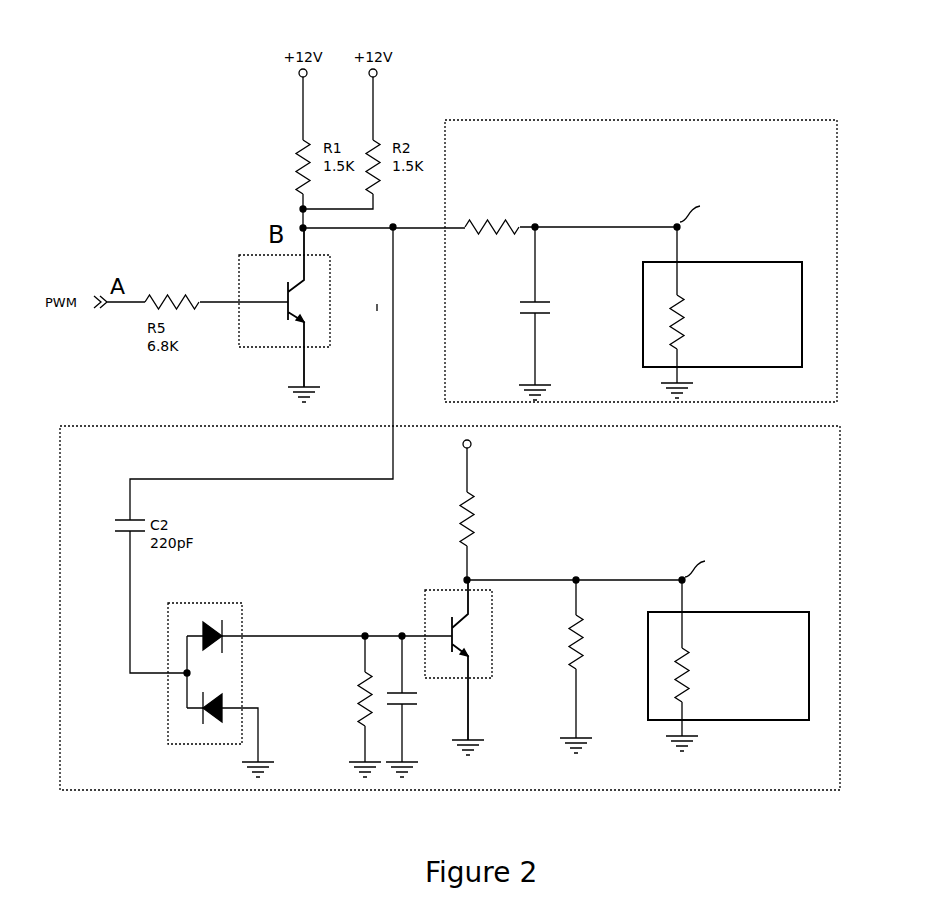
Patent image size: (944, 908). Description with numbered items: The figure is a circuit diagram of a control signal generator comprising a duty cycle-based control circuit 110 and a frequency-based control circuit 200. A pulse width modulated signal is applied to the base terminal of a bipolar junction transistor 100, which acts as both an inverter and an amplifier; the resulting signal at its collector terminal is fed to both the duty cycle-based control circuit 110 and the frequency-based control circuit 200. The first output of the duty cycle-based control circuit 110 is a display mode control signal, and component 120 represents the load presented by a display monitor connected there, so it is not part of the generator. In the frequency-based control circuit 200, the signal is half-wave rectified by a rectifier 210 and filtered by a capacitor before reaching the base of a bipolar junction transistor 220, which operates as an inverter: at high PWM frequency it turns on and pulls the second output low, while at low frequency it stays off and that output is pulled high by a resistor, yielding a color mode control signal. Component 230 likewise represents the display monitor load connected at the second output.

The bipolar junction transistor 100 is at (331, 298).
The duty cycle-based control circuit 110 is at (540, 120).
The load presented by a display monitor 120 is at (720, 260).
The frequency-based control circuit 200 is at (450, 606).
The rectifier 210 is at (193, 600).
The bipolar junction transistor 220 is at (492, 638).
The load presented by a display monitor 230 is at (720, 613).